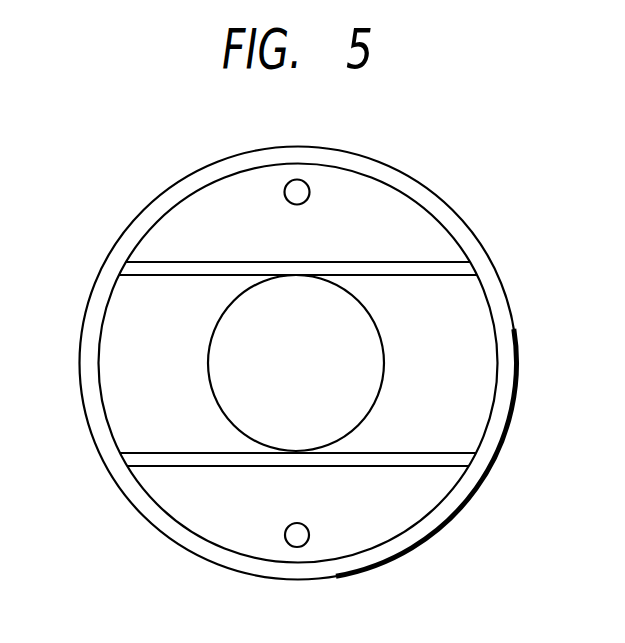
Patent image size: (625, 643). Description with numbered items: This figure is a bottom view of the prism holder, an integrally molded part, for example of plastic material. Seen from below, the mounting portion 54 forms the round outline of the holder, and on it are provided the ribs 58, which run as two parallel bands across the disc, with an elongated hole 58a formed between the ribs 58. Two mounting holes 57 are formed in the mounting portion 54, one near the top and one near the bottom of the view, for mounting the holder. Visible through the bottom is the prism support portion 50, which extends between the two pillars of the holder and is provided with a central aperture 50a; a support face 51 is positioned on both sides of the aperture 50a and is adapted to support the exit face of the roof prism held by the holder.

The prism support portion 50 is at (495, 270).
The aperture 50a is at (365, 392).
The support face 51 is at (445, 325).
The mounting portion 54 is at (432, 517).
The mounting holes 57 is at (300, 185).
The ribs 58 is at (88, 362).
The elongated hole 58a is at (130, 437).